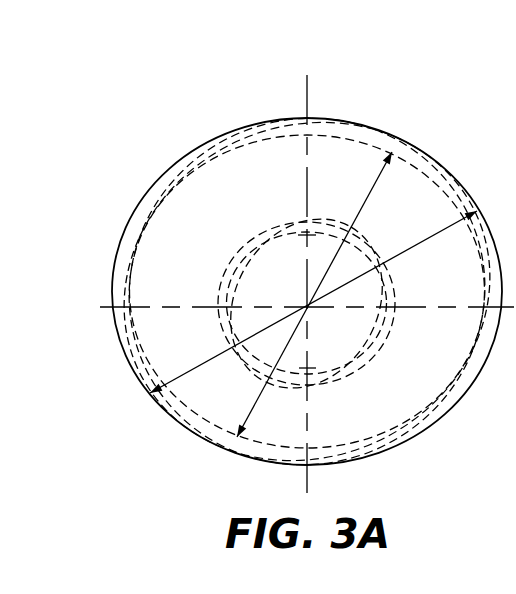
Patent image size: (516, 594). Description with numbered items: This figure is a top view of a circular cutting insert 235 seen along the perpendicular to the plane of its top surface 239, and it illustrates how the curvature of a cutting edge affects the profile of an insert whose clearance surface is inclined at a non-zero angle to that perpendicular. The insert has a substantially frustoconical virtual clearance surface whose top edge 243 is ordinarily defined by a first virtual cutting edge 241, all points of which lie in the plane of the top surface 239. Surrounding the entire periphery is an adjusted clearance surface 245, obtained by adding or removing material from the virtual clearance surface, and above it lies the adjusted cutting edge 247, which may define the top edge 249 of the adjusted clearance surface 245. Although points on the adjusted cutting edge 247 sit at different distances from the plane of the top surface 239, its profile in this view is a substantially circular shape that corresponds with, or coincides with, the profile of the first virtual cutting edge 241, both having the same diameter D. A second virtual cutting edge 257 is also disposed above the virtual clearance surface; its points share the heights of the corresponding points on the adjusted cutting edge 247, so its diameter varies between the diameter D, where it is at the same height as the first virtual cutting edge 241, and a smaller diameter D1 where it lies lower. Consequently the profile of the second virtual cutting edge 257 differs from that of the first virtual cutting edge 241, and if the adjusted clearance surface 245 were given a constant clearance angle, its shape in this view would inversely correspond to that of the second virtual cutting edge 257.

The cutting insert 235 is at (137, 152).
The top surface 239 is at (415, 206).
The first virtual cutting edge 241 is at (284, 291).
The top edge of virtual clearance surface 243 is at (307, 269).
The adjusted clearance surface 245 is at (358, 295).
The adjusted cutting edge 247 is at (378, 125).
The top edge of adjusted clearance surface 249 is at (268, 120).
The second virtual cutting edge 257 is at (410, 430).
The diameter D is at (407, 253).
The another diameter D1 is at (368, 194).